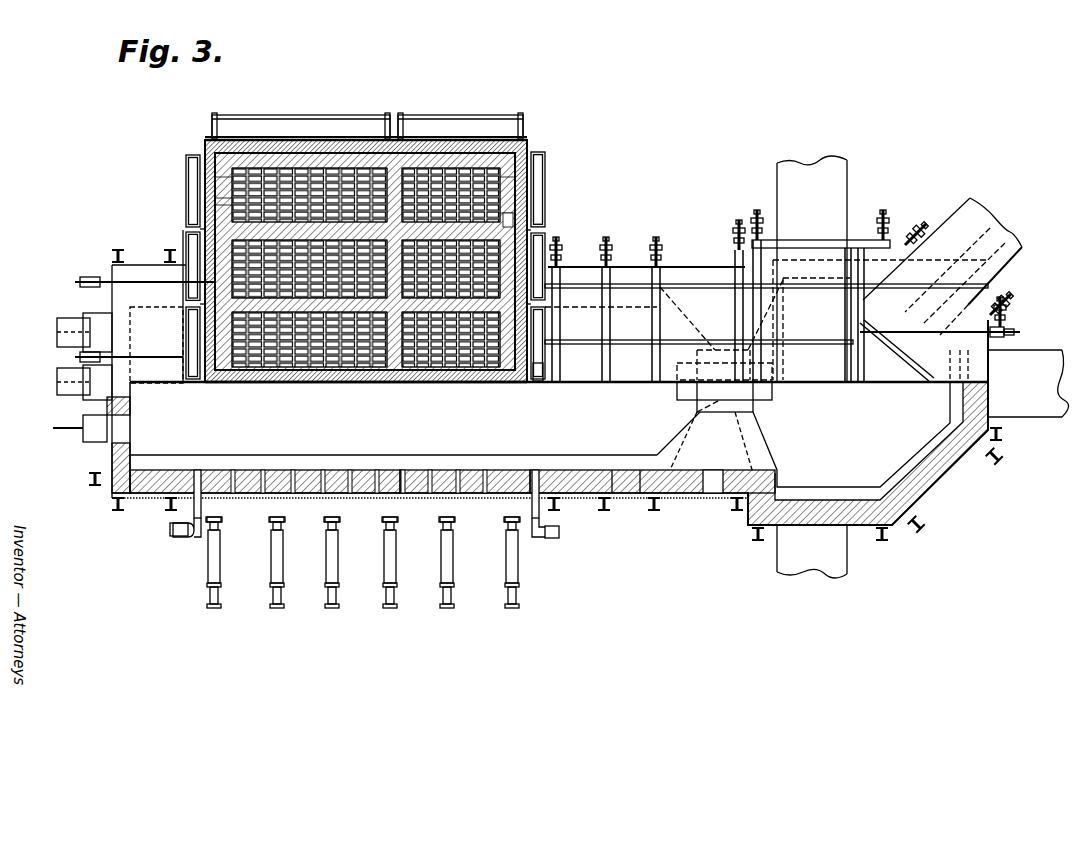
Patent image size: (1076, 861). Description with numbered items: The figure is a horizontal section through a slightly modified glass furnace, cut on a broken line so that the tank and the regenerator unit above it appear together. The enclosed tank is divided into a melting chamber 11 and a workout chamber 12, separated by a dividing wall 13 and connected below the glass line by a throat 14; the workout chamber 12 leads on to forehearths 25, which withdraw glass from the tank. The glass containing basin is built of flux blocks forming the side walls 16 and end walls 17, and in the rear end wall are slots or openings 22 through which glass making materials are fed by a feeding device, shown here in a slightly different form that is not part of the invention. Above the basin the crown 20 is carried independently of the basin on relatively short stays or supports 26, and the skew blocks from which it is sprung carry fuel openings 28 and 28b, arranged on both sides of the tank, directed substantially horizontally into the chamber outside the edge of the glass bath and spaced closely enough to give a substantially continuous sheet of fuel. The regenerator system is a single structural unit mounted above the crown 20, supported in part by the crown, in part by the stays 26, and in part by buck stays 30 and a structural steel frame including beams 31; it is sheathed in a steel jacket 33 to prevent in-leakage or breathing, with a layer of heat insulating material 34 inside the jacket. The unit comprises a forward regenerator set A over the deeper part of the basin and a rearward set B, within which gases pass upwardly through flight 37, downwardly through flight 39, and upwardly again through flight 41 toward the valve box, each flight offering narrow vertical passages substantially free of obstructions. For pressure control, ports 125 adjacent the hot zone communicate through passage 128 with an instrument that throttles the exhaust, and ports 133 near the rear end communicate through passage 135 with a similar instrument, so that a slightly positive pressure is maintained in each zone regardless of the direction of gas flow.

The melting chamber 11 is at (538, 370).
The workout chamber 12 is at (875, 430).
The dividing wall 13 is at (743, 403).
The throat 14 is at (703, 398).
The side walls 16 is at (583, 470).
The end walls 17 is at (132, 402).
The crown 20 is at (578, 384).
The slots or openings 22 is at (134, 334).
The forehearths 25 is at (963, 218).
The stays or supports 26 is at (325, 520).
The fuel openings 28 is at (485, 470).
The fuel openings 28b is at (377, 470).
The buck stays 30 is at (214, 120).
The beams 31 is at (220, 570).
The steel jacket 33 is at (525, 198).
The heat insulating material 34 is at (305, 147).
The flight 37 is at (452, 178).
The flight 39 is at (503, 250).
The flight 41 is at (460, 380).
The ports 125 is at (537, 472).
The passage 128 is at (548, 536).
The ports 133 is at (200, 472).
The passage 135 is at (178, 530).
The forward regenerator set A is at (487, 200).
The rearward regenerator set B is at (215, 205).